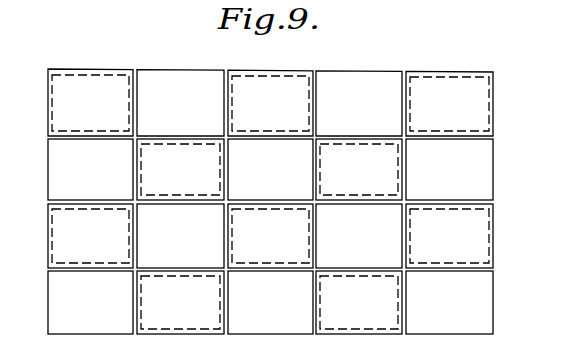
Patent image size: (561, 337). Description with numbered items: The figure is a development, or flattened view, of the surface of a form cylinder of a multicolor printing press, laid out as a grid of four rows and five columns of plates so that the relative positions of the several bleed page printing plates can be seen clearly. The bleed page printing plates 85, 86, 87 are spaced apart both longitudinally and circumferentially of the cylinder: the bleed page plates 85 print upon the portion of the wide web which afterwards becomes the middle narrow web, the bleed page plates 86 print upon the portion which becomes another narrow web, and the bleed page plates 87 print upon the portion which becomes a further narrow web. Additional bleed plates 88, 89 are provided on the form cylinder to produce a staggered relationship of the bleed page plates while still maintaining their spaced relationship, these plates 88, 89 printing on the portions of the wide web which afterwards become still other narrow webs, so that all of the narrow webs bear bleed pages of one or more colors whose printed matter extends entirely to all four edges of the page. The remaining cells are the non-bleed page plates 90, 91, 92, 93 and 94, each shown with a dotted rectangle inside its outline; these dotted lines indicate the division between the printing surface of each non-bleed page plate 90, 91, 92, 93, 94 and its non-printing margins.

The bleed page printing plate 85 is at (270, 236).
The bleed page printing plate 86 is at (90, 236).
The bleed page printing plate 87 is at (449, 236).
The additional bleed plate 88 is at (180, 169).
The additional bleed plate 89 is at (359, 169).
The non-bleed page plate 90 is at (270, 169).
The non-bleed page plate 91 is at (90, 168).
The non-bleed page plate 92 is at (449, 169).
The non-bleed page plate 93 is at (180, 236).
The non-bleed page plate 94 is at (359, 236).